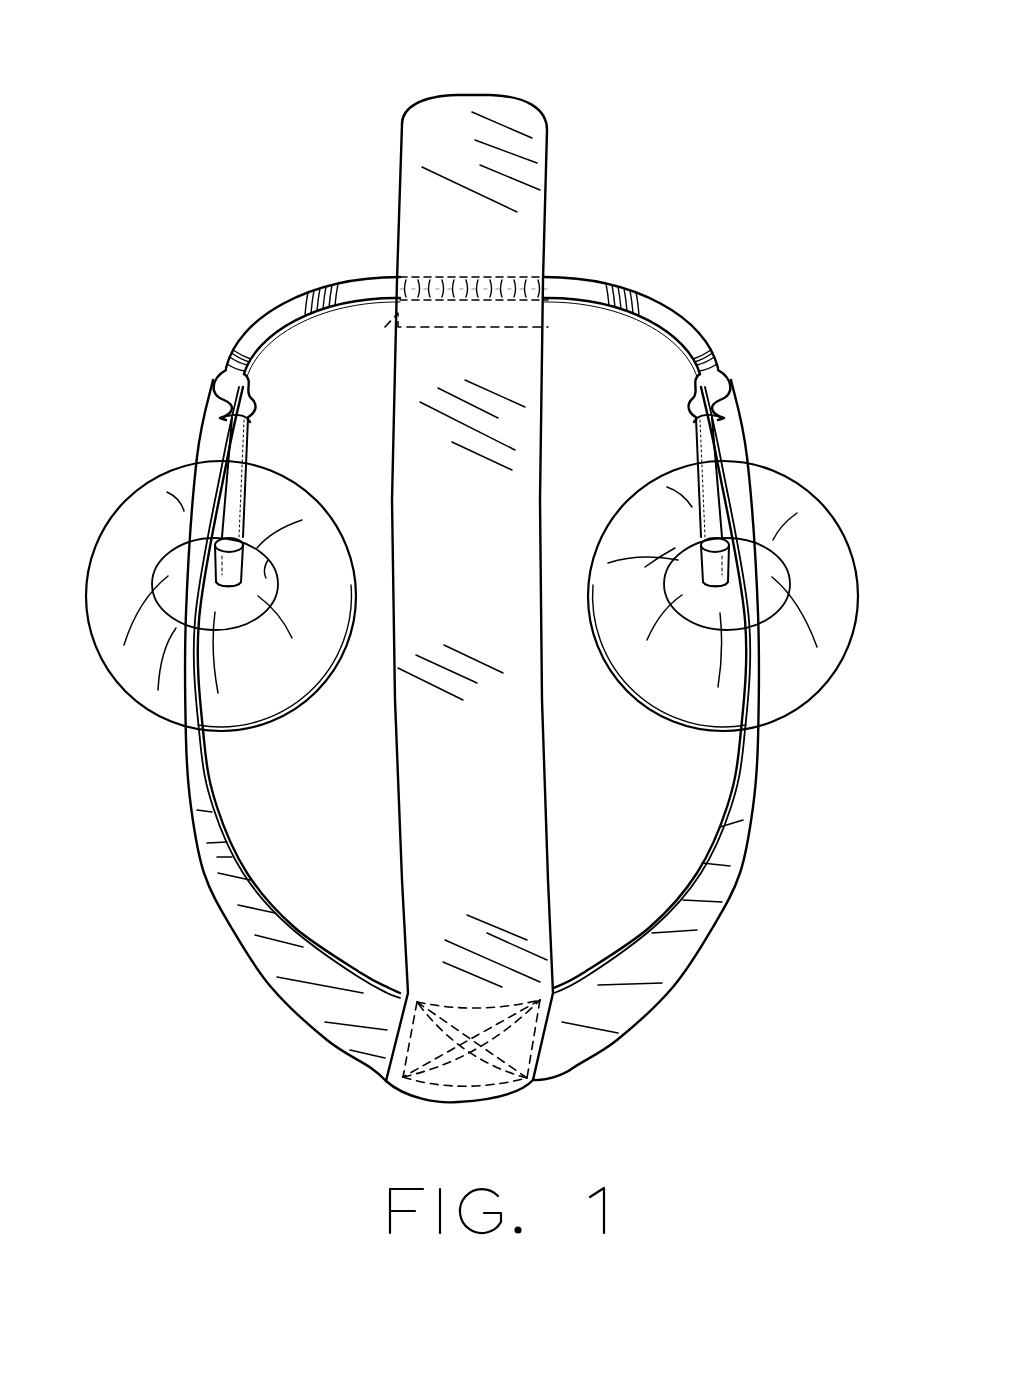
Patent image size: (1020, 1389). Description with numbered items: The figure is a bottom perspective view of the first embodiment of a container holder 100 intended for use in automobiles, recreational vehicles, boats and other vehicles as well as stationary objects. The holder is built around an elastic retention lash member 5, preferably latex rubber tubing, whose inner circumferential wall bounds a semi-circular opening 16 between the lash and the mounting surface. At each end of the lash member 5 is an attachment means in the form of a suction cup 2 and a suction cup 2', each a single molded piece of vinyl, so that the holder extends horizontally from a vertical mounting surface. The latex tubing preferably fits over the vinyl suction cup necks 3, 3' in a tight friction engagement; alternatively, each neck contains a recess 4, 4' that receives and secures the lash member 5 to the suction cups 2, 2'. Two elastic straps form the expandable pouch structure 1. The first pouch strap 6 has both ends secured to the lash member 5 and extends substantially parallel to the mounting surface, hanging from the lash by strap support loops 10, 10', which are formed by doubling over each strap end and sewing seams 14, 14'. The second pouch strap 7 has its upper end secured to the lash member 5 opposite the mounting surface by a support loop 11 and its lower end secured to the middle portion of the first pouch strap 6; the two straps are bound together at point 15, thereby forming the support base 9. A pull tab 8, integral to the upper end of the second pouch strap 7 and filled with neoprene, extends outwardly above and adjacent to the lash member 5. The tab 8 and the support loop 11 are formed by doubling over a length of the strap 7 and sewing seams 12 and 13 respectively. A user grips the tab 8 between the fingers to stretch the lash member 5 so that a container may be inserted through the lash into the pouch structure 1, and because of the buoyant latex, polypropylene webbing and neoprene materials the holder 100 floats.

The container holder 100 is at (738, 233).
The expandable pouch structure 1 is at (183, 1030).
The suction cup 2 is at (198, 579).
The suction cup 2' is at (764, 596).
The suction cup neck 3 is at (262, 503).
The suction cup neck 3' is at (655, 503).
The recess 4 is at (258, 693).
The recess 4' is at (680, 693).
The elastic retention lash member 5 is at (350, 291).
The first pouch strap 6 is at (232, 856).
The second pouch strap 7 is at (432, 804).
The pull tab 8 is at (488, 116).
The support base 9 is at (622, 1006).
The strap support loop 10 is at (189, 343).
The strap support loop 10' is at (746, 360).
The support loop 11 is at (525, 287).
The seam 12 is at (447, 290).
The seam 13 is at (455, 306).
The seam 14 is at (266, 437).
The seam 14' is at (769, 463).
The binding point 15 is at (395, 1086).
The opening 16 is at (607, 378).